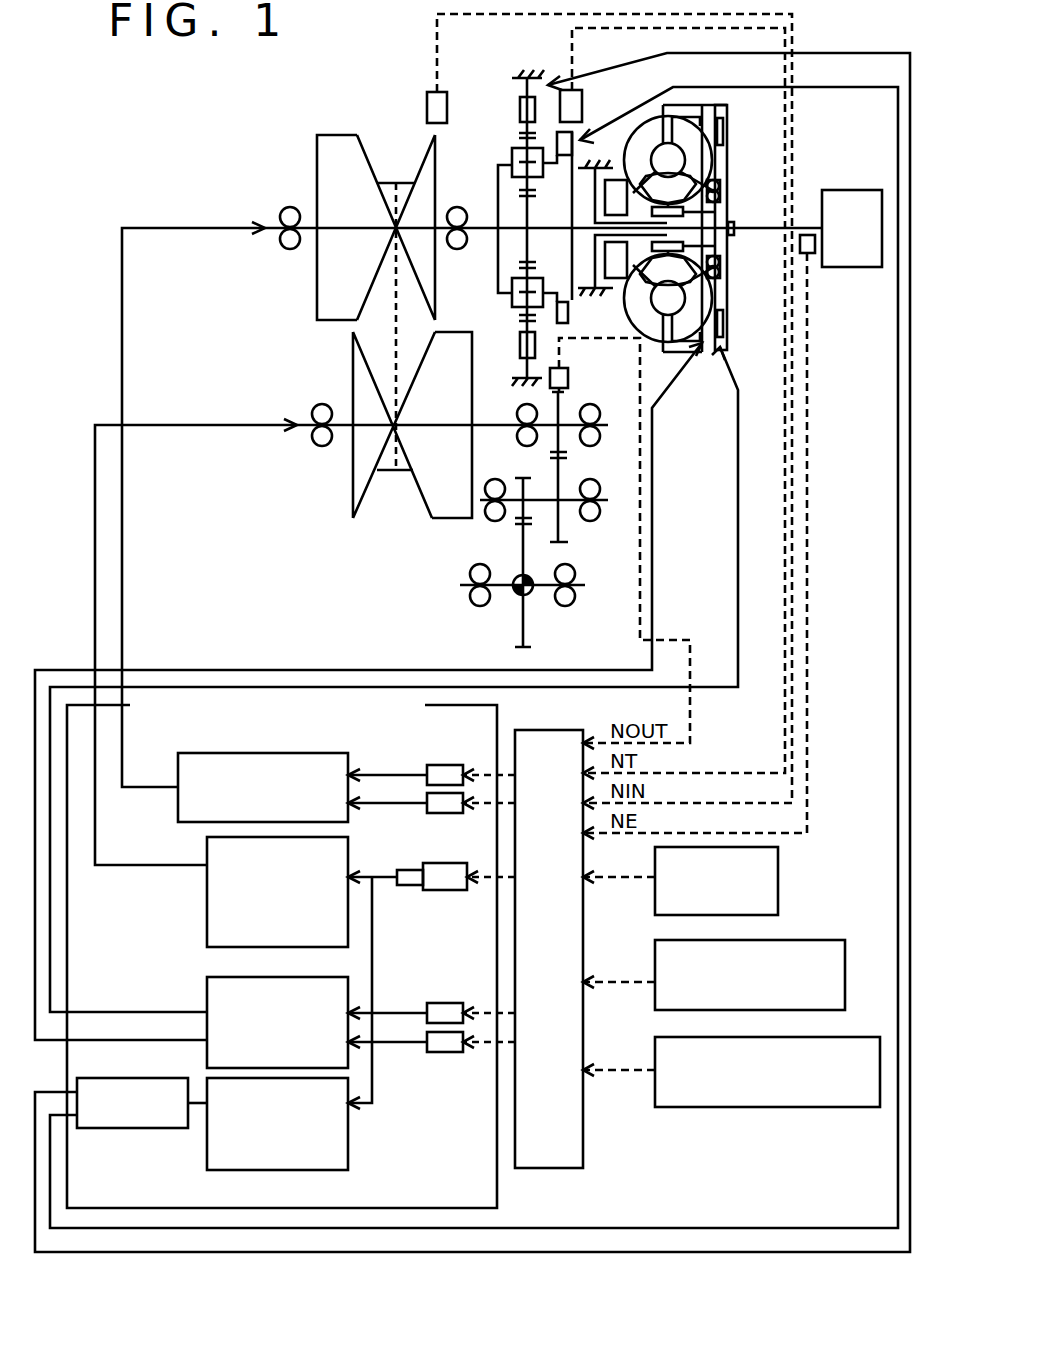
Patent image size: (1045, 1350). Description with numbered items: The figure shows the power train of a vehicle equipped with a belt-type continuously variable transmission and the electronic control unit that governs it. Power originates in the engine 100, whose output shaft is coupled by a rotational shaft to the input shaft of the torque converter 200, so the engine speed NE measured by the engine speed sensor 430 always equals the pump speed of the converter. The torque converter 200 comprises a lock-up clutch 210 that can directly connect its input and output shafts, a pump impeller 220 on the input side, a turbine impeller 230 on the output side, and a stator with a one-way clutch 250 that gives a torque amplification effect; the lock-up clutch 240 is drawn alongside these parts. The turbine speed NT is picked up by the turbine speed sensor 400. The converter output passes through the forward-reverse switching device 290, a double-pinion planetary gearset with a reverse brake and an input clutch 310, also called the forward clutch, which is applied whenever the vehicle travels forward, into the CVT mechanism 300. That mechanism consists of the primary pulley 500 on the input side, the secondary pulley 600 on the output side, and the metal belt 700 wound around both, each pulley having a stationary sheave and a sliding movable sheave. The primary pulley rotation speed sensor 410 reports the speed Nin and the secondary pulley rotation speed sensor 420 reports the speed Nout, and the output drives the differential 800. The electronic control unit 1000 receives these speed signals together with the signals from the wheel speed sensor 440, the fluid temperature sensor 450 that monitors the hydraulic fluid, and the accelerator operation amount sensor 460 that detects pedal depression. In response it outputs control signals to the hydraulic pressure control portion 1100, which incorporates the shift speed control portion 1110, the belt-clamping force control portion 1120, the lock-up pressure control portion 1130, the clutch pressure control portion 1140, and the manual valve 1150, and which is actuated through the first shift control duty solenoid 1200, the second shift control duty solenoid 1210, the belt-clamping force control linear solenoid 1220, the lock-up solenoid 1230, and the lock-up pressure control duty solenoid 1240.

The engine 100 is at (837, 190).
The torque converter 200 is at (680, 204).
The lock-up clutch 210 is at (713, 335).
The pump impeller 220 is at (650, 136).
The turbine impeller 230 is at (690, 122).
The lock-up clutch 240 is at (695, 168).
The one-way clutch 250 is at (690, 215).
The forward-reverse switching device 290 is at (503, 100).
The belt-type CVT mechanism 300 is at (475, 542).
The input clutch 310 is at (557, 140).
The turbine speed sensor 400 is at (582, 105).
The primary pulley rotation speed sensor 410 is at (430, 108).
The secondary pulley rotation speed sensor 420 is at (600, 368).
The engine speed sensor 430 is at (812, 253).
The wheel speed sensor 440 is at (778, 877).
The fluid temperature sensor 450 is at (870, 938).
The accelerator operation amount sensor 460 is at (800, 1107).
The primary pulley 500 is at (320, 286).
The secondary pulley 600 is at (362, 473).
The metal belt 700 is at (357, 322).
The differential 800 is at (532, 598).
The ECU 1000 is at (583, 1128).
The hydraulic pressure control portion 1100 is at (497, 705).
The shift speed control portion 1110 is at (178, 800).
The belt-clamping force control portion 1120 is at (207, 893).
The lock-up pressure control portion 1130 is at (207, 995).
The clutch pressure control portion 1140 is at (348, 1140).
The manual valve 1150 is at (130, 1128).
The shift control duty solenoid (1) 1200 is at (440, 813).
The shift control duty solenoid (2) 1210 is at (457, 765).
The belt-clamping force control linear solenoid 1220 is at (440, 890).
The lock-up solenoid 1230 is at (457, 1003).
The lock-up pressure control duty solenoid 1240 is at (440, 1052).